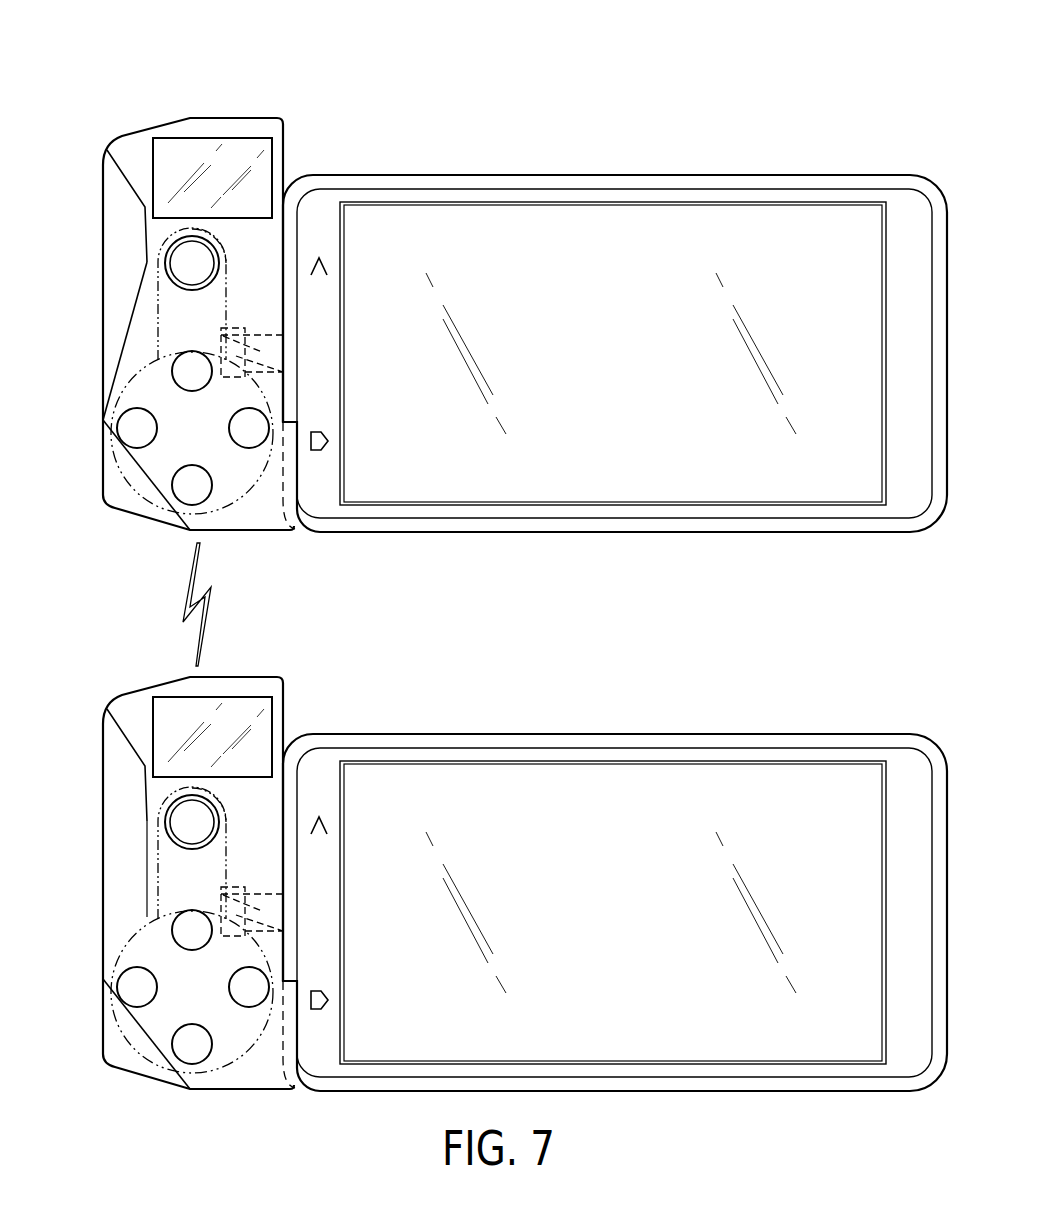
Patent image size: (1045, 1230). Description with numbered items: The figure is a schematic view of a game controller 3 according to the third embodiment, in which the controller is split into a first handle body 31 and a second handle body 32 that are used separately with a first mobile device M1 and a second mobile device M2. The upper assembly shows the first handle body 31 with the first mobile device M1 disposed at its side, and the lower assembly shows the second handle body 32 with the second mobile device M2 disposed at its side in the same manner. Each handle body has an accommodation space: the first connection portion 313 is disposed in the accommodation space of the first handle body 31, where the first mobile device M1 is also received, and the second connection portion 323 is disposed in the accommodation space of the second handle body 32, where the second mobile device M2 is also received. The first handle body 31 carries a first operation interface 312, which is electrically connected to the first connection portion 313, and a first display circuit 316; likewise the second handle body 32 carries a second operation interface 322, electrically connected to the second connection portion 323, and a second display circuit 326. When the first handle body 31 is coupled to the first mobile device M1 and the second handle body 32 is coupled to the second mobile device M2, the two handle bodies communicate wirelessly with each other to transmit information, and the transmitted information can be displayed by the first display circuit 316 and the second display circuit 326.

The game controller 3 is at (794, 1).
The first handle body 31 is at (138, 150).
The second handle body 32 is at (162, 855).
The first display circuit 316 is at (233, 150).
The second display circuit 326 is at (218, 699).
The first operation interface 312 is at (158, 313).
The second operation interface 322 is at (128, 853).
The first connection portion 313 is at (221, 335).
The second connection portion 323 is at (156, 908).
The first mobile device M1 is at (613, 175).
The second mobile device M2 is at (615, 876).